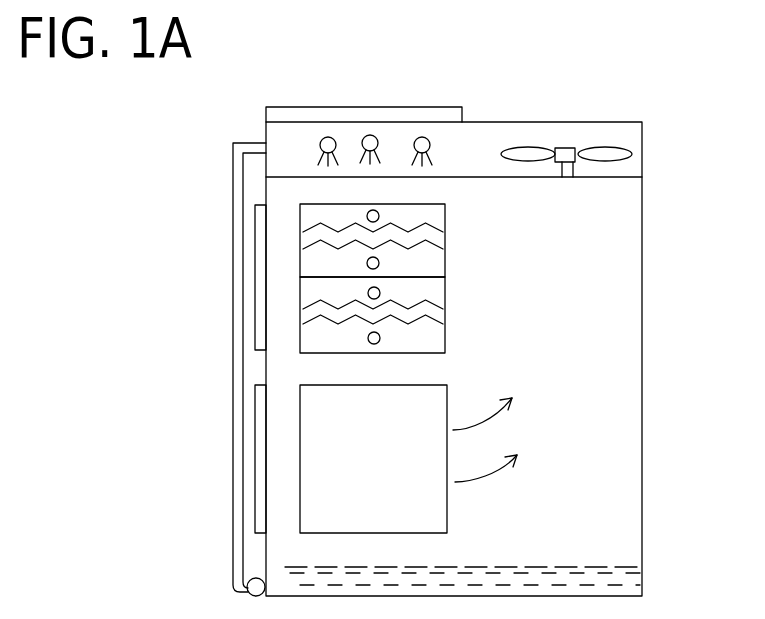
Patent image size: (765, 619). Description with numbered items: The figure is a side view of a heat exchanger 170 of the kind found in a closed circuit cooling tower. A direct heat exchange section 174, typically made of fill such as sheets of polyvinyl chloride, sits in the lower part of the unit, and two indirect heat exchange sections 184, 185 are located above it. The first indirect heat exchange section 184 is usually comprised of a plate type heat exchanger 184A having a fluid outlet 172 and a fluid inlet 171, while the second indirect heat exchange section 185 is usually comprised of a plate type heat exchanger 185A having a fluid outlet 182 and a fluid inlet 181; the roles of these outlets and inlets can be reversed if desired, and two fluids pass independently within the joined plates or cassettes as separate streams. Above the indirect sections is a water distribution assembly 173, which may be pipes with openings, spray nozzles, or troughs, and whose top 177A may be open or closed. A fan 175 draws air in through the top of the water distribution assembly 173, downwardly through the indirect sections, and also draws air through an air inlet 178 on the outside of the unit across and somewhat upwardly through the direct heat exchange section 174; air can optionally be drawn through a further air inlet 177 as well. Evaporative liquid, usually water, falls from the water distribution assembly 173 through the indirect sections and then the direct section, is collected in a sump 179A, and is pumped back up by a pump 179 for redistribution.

The heat exchanger 170 is at (654, 231).
The fluid inlet 171 is at (366, 265).
The fluid outlet 172 is at (377, 211).
The water distribution assembly 173 is at (422, 137).
The direct heat exchange section 174 is at (448, 512).
The fan 175 is at (600, 146).
The air inlet 177 is at (250, 273).
The top of the water distribution assembly 177A is at (335, 107).
The air inlet 178 is at (257, 440).
The pump 179 is at (248, 592).
The sump 179A is at (583, 567).
The fluid inlet 181 is at (380, 343).
The fluid outlet 182 is at (381, 292).
The first indirect heat exchange section 184 is at (445, 249).
The plate type heat exchanger 184A is at (433, 227).
The second indirect heat exchange section 185 is at (445, 325).
The plate type heat exchanger 185A is at (432, 305).